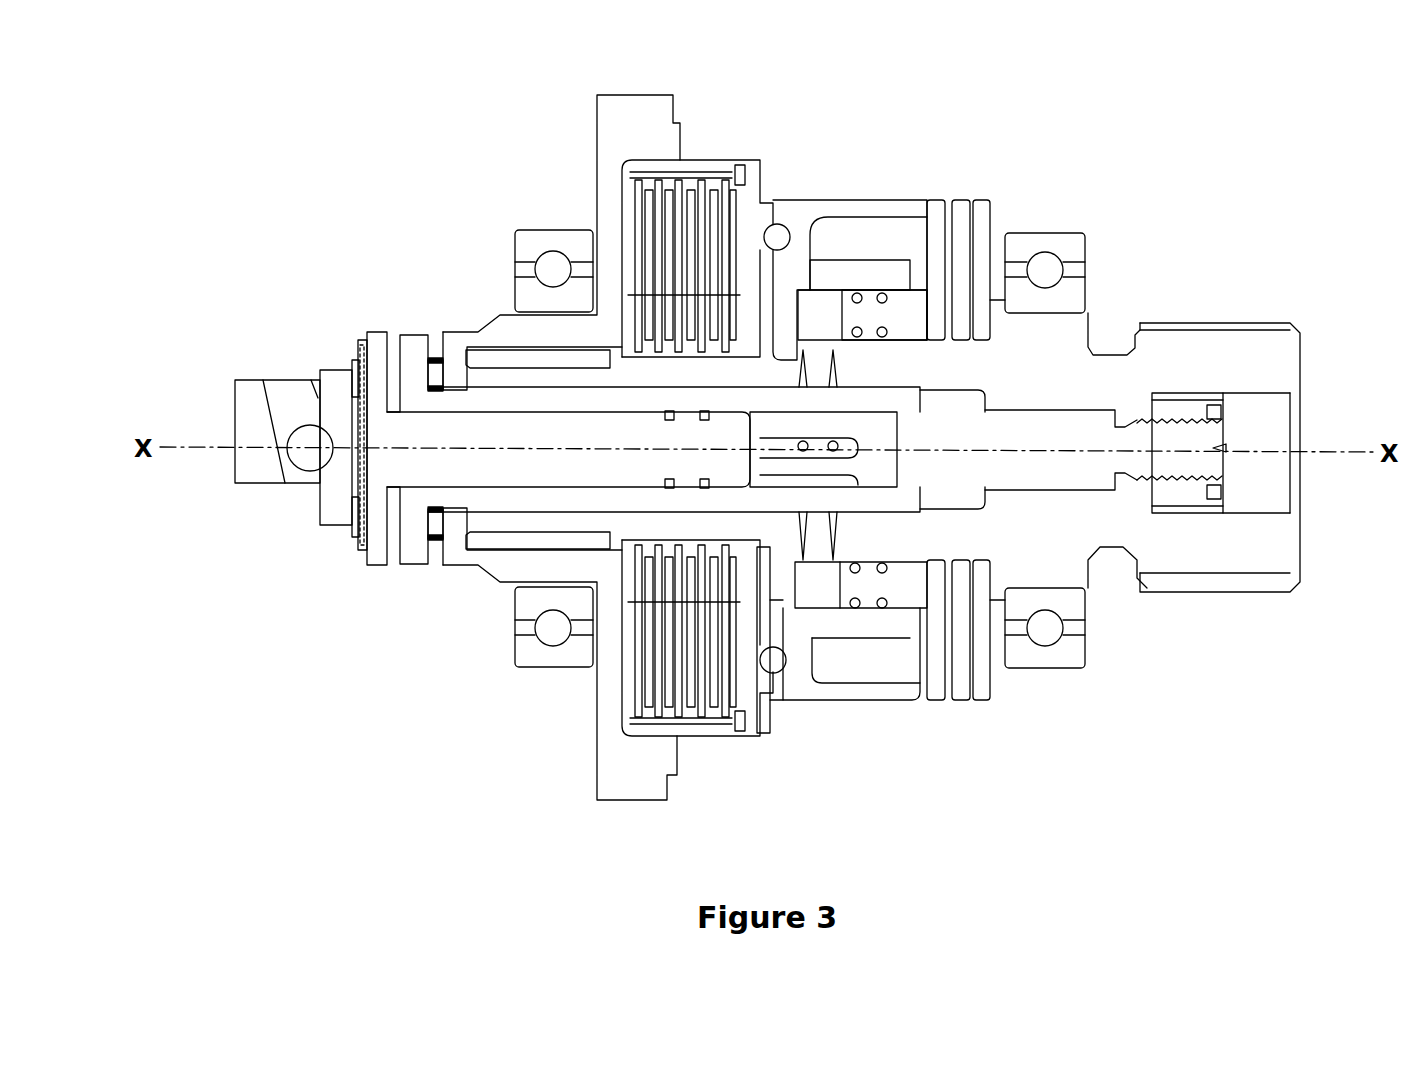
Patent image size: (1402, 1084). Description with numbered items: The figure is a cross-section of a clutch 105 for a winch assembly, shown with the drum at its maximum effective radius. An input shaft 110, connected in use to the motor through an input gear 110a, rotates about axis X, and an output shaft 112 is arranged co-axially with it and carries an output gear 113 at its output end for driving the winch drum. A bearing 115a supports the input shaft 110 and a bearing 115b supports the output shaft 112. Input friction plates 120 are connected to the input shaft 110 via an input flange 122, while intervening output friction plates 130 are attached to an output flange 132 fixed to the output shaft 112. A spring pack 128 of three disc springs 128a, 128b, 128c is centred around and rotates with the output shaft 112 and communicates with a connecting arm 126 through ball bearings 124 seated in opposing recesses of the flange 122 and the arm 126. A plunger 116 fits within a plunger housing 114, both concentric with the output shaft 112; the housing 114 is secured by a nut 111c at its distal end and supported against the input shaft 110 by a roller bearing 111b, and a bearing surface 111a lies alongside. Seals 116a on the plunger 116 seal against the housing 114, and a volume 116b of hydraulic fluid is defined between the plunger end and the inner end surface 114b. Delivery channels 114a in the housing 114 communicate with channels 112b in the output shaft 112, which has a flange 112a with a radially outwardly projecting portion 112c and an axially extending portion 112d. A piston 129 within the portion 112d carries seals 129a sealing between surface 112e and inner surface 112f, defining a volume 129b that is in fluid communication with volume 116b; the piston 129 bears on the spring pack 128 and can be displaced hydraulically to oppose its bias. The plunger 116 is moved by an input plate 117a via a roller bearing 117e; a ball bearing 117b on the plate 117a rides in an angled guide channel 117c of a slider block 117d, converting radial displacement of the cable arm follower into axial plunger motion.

The clutch 105 is at (312, 222).
The input shaft 110 is at (520, 330).
The input gear 110a is at (620, 130).
The sleeve bearing 111a is at (520, 540).
The roller bearing 111b is at (434, 518).
The nut 111c is at (1183, 412).
The output shaft 112 is at (1027, 380).
The flange 112a is at (813, 590).
The channels 112b is at (808, 444).
The radially outwardly projecting portion 112c is at (763, 667).
The axially extending portion 112d is at (853, 625).
The surface 112e is at (900, 562).
The inner surface 112f is at (885, 612).
The output gear 113 is at (1190, 348).
The plunger housing 114 is at (478, 405).
The delivery channels 114a is at (850, 447).
The inner end surface 114b is at (900, 428).
The bearing 115a is at (553, 650).
The bearing 115b is at (1040, 650).
The plunger 116 is at (405, 432).
The seals 116a is at (700, 418).
The volume 116b is at (873, 468).
The input plate 117a is at (336, 409).
The ball bearing 117b is at (305, 456).
The guide channel 117c is at (283, 397).
The slider block 117d is at (250, 414).
The roller bearing 117e is at (356, 525).
The input friction plates 120 is at (637, 205).
The input flange 122 is at (757, 212).
The ball bearings 124 is at (777, 224).
The connecting arm 126 is at (847, 205).
The spring pack 128 is at (1001, 162).
The disc spring 128a is at (937, 225).
The disc spring 128b is at (960, 215).
The disc spring 128c is at (979, 225).
The piston 129 is at (908, 310).
The seals 129a is at (882, 293).
The volume 129b is at (786, 585).
The output friction plates 130 is at (627, 228).
The output flange 132 is at (665, 355).